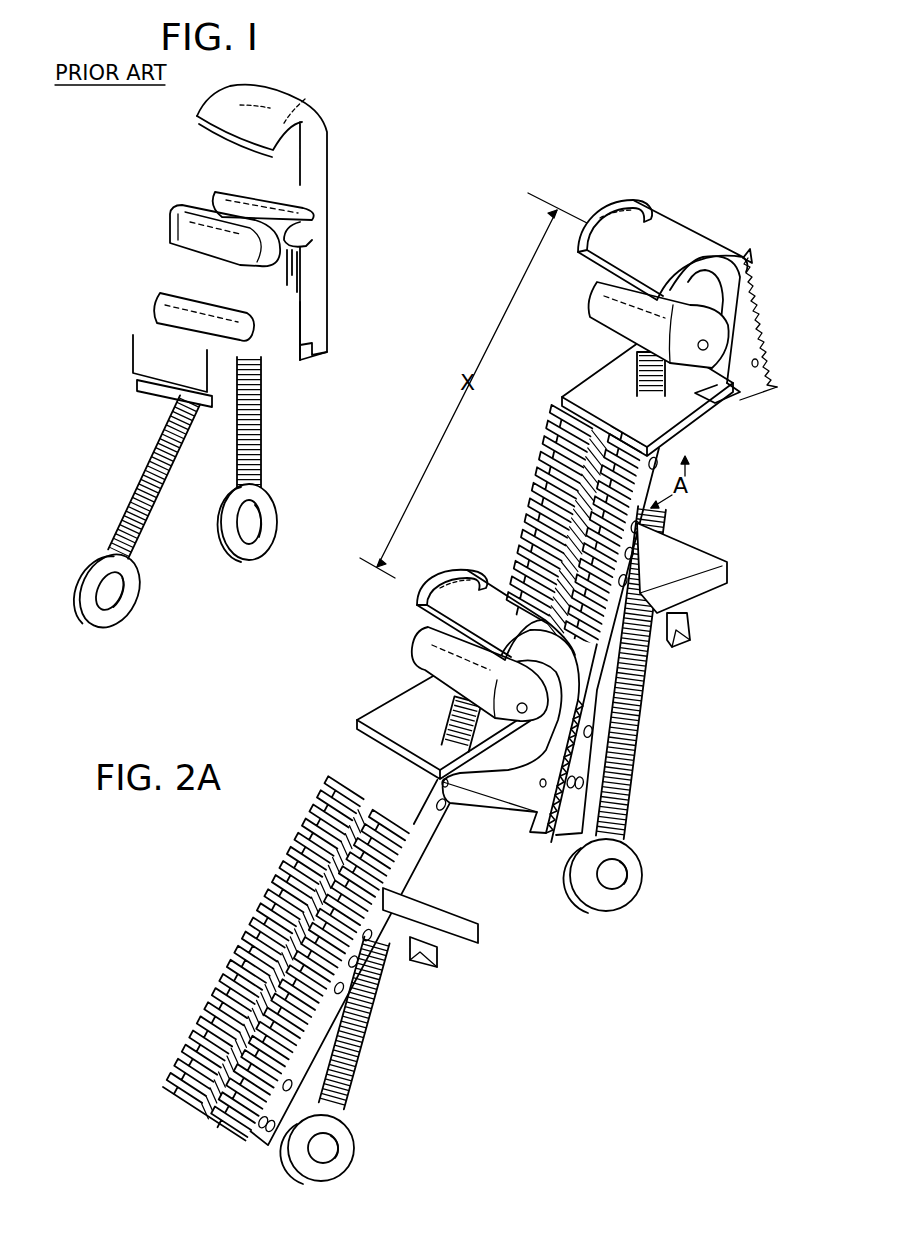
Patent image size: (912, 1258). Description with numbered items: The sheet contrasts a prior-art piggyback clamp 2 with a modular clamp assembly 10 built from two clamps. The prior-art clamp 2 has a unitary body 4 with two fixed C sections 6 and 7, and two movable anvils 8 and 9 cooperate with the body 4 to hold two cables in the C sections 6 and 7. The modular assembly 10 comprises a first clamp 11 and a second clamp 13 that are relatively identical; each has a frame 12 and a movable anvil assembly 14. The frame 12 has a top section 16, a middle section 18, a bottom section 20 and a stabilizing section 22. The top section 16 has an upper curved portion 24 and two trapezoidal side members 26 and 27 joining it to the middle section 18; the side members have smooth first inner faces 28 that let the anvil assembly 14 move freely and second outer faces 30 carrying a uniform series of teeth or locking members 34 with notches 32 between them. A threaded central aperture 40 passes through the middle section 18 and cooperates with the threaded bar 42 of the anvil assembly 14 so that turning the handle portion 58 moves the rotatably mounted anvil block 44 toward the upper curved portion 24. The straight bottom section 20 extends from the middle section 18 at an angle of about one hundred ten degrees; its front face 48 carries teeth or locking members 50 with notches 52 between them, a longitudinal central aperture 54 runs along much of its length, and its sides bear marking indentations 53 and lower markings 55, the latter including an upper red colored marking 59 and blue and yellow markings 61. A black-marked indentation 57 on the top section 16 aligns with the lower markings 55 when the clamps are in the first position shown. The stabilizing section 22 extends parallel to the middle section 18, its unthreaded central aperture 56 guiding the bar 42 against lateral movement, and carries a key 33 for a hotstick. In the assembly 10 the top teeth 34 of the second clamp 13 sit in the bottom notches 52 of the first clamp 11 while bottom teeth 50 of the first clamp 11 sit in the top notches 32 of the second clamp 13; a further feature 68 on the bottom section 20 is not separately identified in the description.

In FIG. 1, the piggyback clamp 2 is at (140, 178).
In FIG. 1, the unitary body 4 is at (295, 316).
In FIG. 1, the C section 6 is at (300, 173).
In FIG. 1, the C section 7 is at (215, 275).
In FIG. 1, the movable anvil 8 is at (235, 190).
In FIG. 1, the movable anvil 9 is at (165, 310).
In FIG. 2A, the modular clamp assembly 10 is at (630, 1004).
In FIG. 2A, the first clamp 11 is at (715, 598).
In FIG. 2A, the frame 12 is at (465, 758).
In FIG. 2A, the second clamp 13 is at (490, 912).
In FIG. 2A, the movable anvil assembly 14 is at (600, 310).
In FIG. 2A, the top section 16 is at (623, 221).
In FIG. 2A, the middle section 18 is at (592, 380).
In FIG. 2A, the bottom section 20 is at (533, 490).
In FIG. 2A, the stabilizing section 22 is at (672, 637).
In FIG. 2A, the upper curved portion 24 is at (670, 226).
In FIG. 2A, the side member 26 is at (745, 340).
In FIG. 2A, the side member 27 is at (512, 750).
In FIG. 2A, the first inner face 28 is at (717, 392).
In FIG. 2A, the second outer face 30 is at (775, 385).
In FIG. 2A, the notch 32 is at (757, 300).
In FIG. 2A, the key 33 is at (676, 631).
In FIG. 2A, the teeth or locking members 34 is at (751, 258).
In FIG. 2A, the central aperture 40 is at (630, 363).
In FIG. 2A, the threaded bar 42 is at (623, 815).
In FIG. 2A, the anvil block 44 is at (600, 295).
In FIG. 2A, the front face 48 is at (533, 478).
In FIG. 2A, the teeth or locking members 50 is at (543, 443).
In FIG. 2A, the notch 52 is at (547, 427).
In FIG. 2A, the marking indentations 53 is at (353, 961).
In FIG. 2A, the longitudinal central aperture 54 is at (557, 545).
In FIG. 2A, the lower markings 55 is at (277, 1104).
In FIG. 2A, the central aperture 56 is at (570, 750).
In FIG. 2A, the indentation 57 is at (535, 808).
In FIG. 2A, the handle portion 58 is at (643, 875).
In FIG. 2A, the red colored marking 59 is at (588, 731).
In FIG. 2A, the blue and yellow markings 61 is at (575, 782).
In FIG. 2A, the rack notch 68 is at (297, 853).